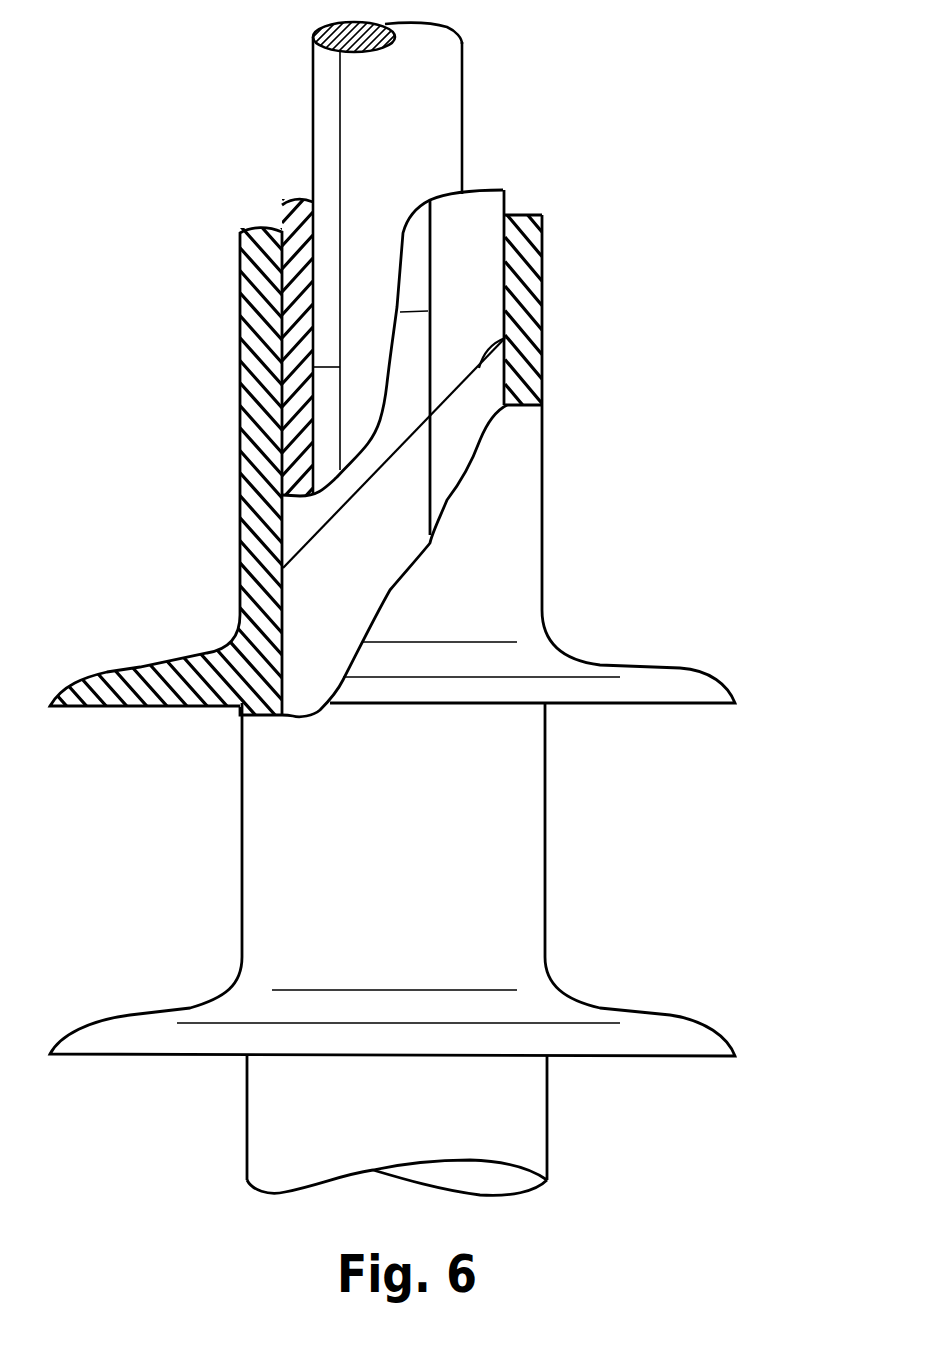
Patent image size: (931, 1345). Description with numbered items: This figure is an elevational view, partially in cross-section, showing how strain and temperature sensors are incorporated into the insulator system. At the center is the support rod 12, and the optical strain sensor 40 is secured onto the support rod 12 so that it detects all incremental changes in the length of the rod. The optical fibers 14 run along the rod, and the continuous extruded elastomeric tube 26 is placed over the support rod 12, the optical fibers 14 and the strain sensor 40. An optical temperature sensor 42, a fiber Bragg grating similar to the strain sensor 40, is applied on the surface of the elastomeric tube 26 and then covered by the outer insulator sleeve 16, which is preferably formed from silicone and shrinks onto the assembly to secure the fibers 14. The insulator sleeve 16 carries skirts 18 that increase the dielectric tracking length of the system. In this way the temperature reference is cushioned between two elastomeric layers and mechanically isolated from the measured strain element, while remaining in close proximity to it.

The support rod 12 is at (436, 108).
The optical fibers 14 is at (505, 333).
The insulator sleeve 16 is at (258, 252).
The skirts 18 is at (89, 682).
The continuous extruded elastomeric tube 26 is at (297, 207).
The optical strain sensor 40 is at (313, 367).
The optical temperature sensor 42 is at (400, 312).